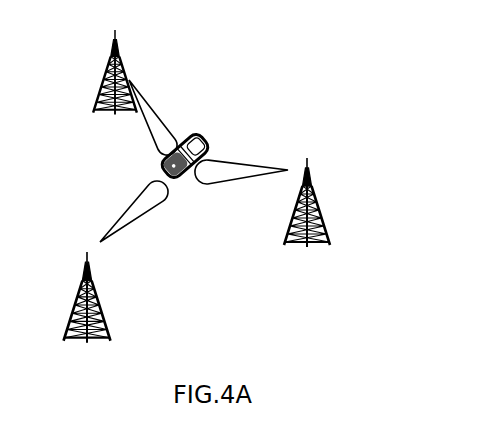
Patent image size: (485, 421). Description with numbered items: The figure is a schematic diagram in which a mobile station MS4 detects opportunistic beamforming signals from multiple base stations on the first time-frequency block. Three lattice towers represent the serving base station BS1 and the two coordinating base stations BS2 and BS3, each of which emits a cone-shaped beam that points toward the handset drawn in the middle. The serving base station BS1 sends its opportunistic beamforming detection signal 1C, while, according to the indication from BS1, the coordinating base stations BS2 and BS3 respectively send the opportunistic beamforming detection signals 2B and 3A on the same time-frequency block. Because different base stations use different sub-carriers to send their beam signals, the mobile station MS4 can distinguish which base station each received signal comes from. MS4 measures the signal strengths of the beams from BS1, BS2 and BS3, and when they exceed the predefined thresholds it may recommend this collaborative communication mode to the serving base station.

The serving base station BS1 is at (91, 276).
The coordinating base station BS2 is at (125, 52).
The coordinating base station BS3 is at (313, 183).
The mobile station MS4 is at (199, 136).
The opportunistic beamforming detection signal 1C is at (128, 208).
The opportunistic beamforming detection signal 2B is at (143, 84).
The opportunistic beamforming detection signal 3A is at (272, 168).